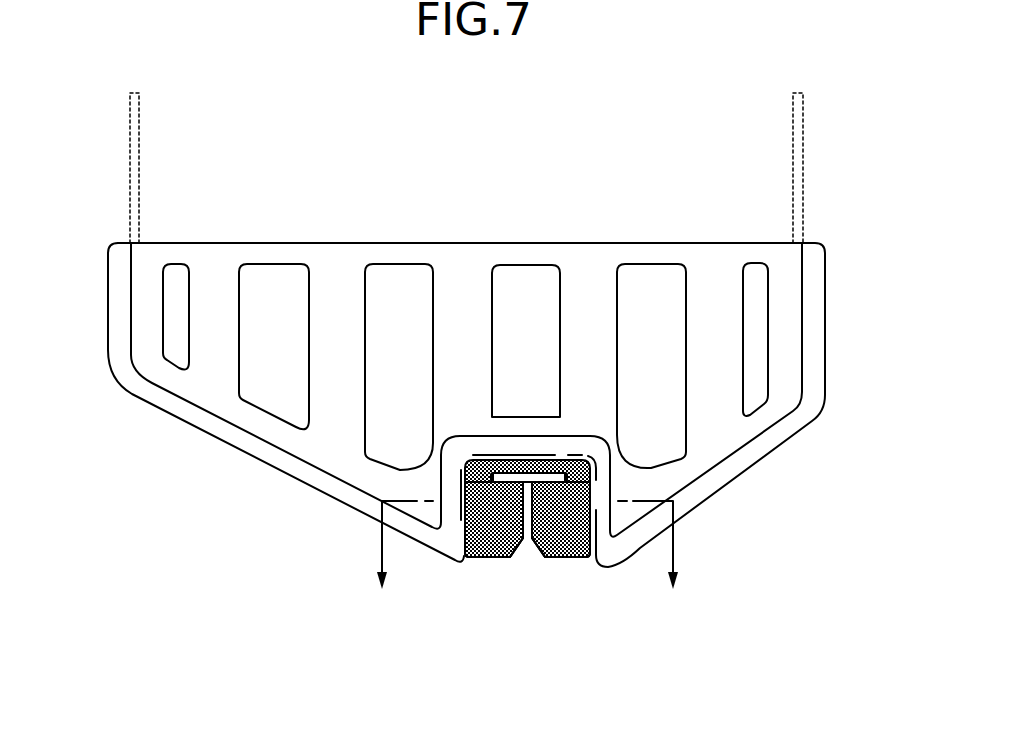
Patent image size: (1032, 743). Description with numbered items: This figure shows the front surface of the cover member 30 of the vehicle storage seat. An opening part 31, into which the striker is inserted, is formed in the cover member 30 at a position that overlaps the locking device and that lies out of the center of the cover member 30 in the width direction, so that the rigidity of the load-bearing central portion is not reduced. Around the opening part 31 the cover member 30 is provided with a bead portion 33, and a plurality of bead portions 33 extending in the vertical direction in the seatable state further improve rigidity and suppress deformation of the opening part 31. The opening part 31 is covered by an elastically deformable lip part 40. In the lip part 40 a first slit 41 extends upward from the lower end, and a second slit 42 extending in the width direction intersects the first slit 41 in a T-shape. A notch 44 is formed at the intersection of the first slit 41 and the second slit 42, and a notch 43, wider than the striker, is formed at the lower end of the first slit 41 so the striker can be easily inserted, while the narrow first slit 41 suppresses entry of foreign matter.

The cover member 30 is at (829, 217).
The opening part 31 is at (587, 509).
The bead portion 33 is at (757, 307).
The lip part 40 is at (571, 491).
The first slit 41 is at (522, 510).
The second slit 42 is at (503, 476).
The notch 43 is at (537, 543).
The notch 44 is at (527, 483).